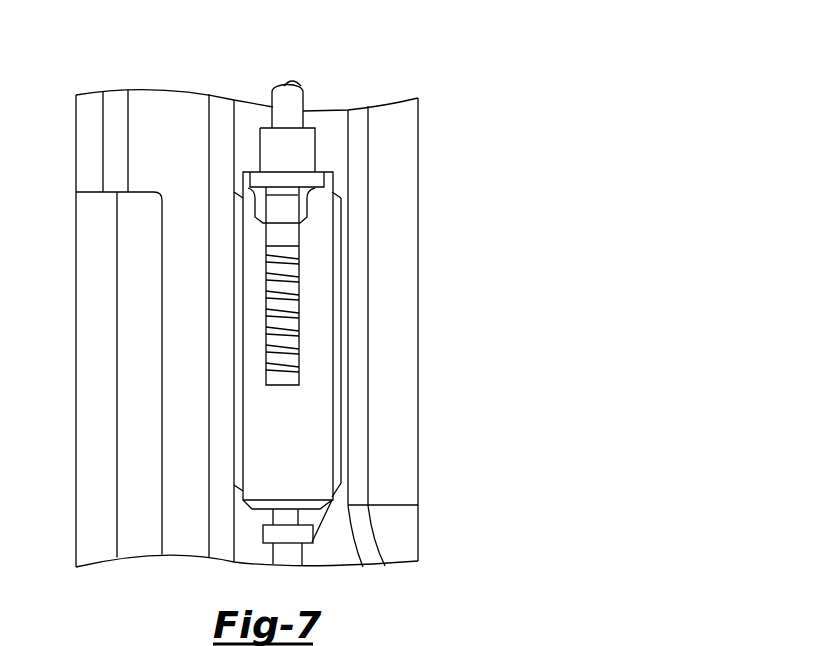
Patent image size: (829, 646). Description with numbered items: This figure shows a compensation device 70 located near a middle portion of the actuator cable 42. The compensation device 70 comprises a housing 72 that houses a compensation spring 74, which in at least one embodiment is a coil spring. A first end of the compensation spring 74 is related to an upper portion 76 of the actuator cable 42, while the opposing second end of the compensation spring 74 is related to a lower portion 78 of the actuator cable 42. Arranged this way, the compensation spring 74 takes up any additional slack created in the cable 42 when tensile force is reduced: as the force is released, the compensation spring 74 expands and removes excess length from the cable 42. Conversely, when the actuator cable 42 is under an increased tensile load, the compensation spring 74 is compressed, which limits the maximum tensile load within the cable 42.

The actuator cable 42 is at (312, 115).
The compensation device 70 is at (442, 260).
The housing 72 is at (307, 458).
The compensation spring 74 is at (287, 345).
The upper portion 76 is at (285, 208).
The lower portion 78 is at (292, 556).